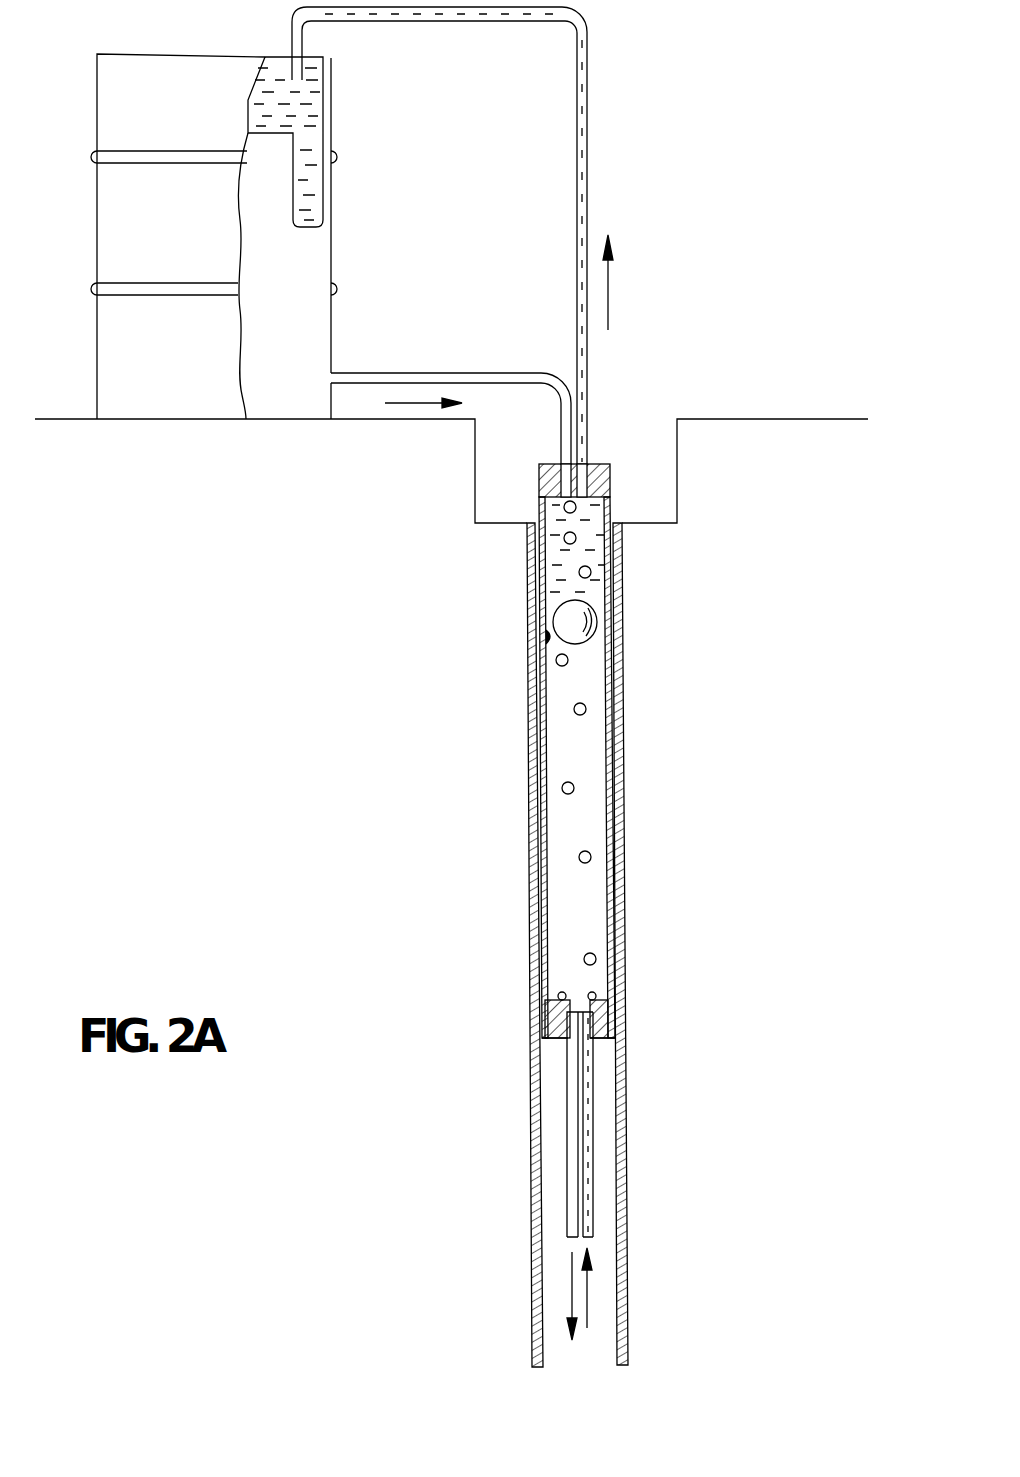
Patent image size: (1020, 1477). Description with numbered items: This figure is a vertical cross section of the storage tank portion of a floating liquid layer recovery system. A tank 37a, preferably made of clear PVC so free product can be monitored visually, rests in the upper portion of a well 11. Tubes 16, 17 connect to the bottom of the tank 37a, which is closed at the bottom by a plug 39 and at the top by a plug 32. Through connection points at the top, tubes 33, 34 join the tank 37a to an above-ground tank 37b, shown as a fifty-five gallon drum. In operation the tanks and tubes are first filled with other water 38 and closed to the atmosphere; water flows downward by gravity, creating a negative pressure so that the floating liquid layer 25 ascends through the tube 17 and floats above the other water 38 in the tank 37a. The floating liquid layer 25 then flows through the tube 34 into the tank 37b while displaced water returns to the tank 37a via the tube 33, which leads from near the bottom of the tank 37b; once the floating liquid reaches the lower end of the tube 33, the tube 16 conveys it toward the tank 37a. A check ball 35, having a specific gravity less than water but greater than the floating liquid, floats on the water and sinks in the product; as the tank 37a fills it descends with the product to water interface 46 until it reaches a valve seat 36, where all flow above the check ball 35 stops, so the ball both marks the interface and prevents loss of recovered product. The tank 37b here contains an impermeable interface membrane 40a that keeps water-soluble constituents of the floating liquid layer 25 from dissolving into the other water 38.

The well 11 is at (532, 795).
The tube 16 is at (565, 1160).
The tube 17 is at (590, 1178).
The floating liquid layer 25 is at (277, 77).
The plug 32 is at (548, 483).
The tube 33 is at (453, 373).
The tube 34 is at (588, 197).
The check ball 35 is at (570, 612).
The valve seat 36 is at (572, 992).
The tank 37a is at (615, 925).
The tank 37b is at (183, 378).
The other water 38 is at (295, 350).
The plug 39 is at (558, 1038).
The impermeable interface membrane 40a is at (328, 117).
The product to water interface 46 is at (545, 652).